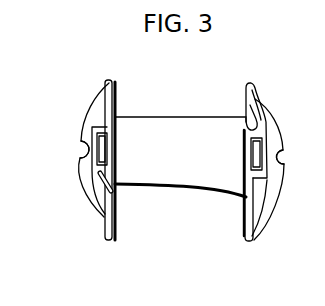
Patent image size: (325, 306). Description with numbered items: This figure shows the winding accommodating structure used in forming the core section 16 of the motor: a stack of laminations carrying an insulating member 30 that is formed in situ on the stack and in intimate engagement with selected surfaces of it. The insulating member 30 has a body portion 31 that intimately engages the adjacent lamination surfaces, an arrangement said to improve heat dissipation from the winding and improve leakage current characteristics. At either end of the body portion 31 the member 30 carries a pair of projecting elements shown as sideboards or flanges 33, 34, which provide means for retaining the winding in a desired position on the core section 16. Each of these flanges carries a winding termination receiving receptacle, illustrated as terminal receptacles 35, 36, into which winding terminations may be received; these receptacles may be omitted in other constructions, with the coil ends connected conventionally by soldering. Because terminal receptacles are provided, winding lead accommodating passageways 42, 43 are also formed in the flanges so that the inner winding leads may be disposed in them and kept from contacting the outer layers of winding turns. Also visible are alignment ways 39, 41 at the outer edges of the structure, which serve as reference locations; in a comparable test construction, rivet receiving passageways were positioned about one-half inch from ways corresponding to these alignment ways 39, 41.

The core section 16 is at (270, 188).
The insulating member 30 is at (218, 195).
The body portion 31 is at (190, 127).
The flange 33 is at (113, 80).
The flange 34 is at (253, 102).
The terminal receptacle 35 is at (104, 156).
The terminal receptacle 36 is at (258, 153).
The alignment way 39 is at (284, 158).
The alignment way 41 is at (80, 146).
The winding lead accommodating passageway 42 is at (114, 191).
The winding lead accommodating passageway 43 is at (250, 125).